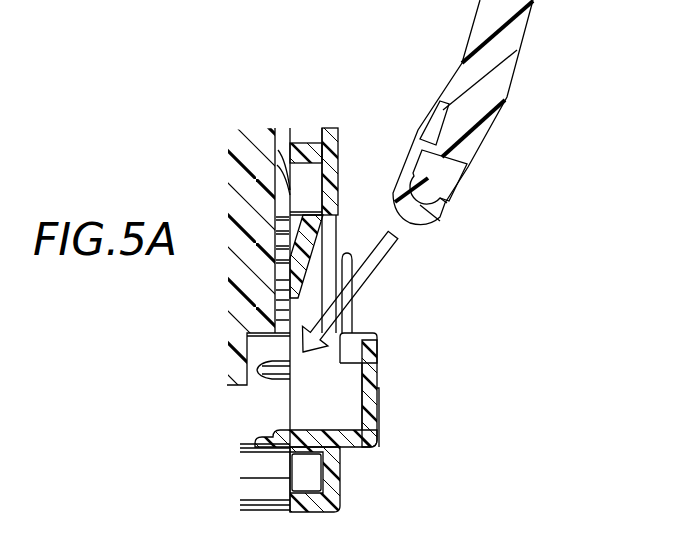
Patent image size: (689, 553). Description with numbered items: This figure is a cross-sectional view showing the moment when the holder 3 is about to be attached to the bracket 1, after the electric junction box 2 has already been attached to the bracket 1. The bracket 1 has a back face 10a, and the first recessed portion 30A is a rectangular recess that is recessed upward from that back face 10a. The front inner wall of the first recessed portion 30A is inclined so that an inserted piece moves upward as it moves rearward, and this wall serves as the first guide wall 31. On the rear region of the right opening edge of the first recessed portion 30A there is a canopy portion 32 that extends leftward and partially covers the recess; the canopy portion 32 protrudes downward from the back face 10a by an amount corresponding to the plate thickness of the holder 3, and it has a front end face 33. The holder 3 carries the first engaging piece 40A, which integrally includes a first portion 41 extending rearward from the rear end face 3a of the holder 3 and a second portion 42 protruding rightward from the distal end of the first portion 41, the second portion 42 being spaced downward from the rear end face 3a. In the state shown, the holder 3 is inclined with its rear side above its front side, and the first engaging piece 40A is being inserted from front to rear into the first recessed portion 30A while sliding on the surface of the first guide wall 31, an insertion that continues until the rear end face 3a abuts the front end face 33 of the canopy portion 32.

The bracket 1 is at (322, 278).
The electric junction box 2 is at (247, 115).
The holder 3 is at (505, 123).
The rear end face 3a is at (470, 170).
The back face 10a is at (339, 127).
The first guide wall 31 is at (330, 250).
The canopy portion 32 is at (376, 363).
The front end face 33 is at (370, 331).
The first recessed portion 30A is at (374, 382).
The first engaging piece 40A is at (503, 198).
The first portion 41 is at (458, 182).
The second portion 42 is at (440, 194).